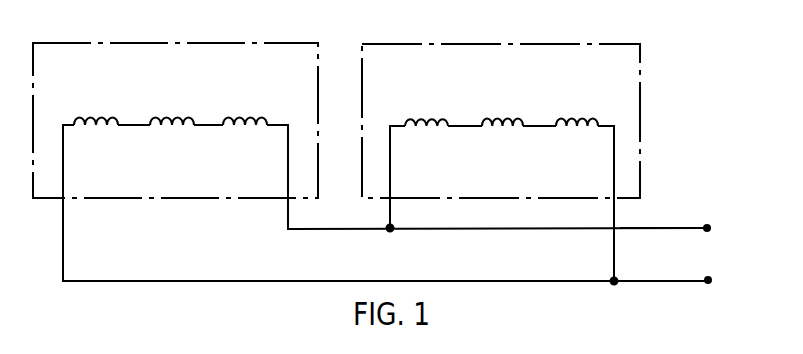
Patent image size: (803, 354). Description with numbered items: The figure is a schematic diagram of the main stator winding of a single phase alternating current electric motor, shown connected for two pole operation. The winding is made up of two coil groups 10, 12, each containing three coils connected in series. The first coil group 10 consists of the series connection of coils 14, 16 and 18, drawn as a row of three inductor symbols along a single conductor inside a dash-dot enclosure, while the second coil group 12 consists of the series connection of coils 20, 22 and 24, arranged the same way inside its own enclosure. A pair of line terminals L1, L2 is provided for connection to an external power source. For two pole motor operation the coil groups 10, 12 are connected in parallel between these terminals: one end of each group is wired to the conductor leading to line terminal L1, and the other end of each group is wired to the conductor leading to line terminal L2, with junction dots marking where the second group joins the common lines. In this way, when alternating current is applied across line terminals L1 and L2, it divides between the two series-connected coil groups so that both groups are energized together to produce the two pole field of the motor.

The coil group 10 is at (197, 43).
The coil group 12 is at (500, 44).
The coil 14 is at (103, 127).
The coil 16 is at (172, 128).
The coil 18 is at (247, 128).
The coil 20 is at (431, 130).
The coil 22 is at (497, 130).
The coil 24 is at (567, 130).
The line terminal L1 is at (707, 228).
The line terminal L2 is at (708, 281).